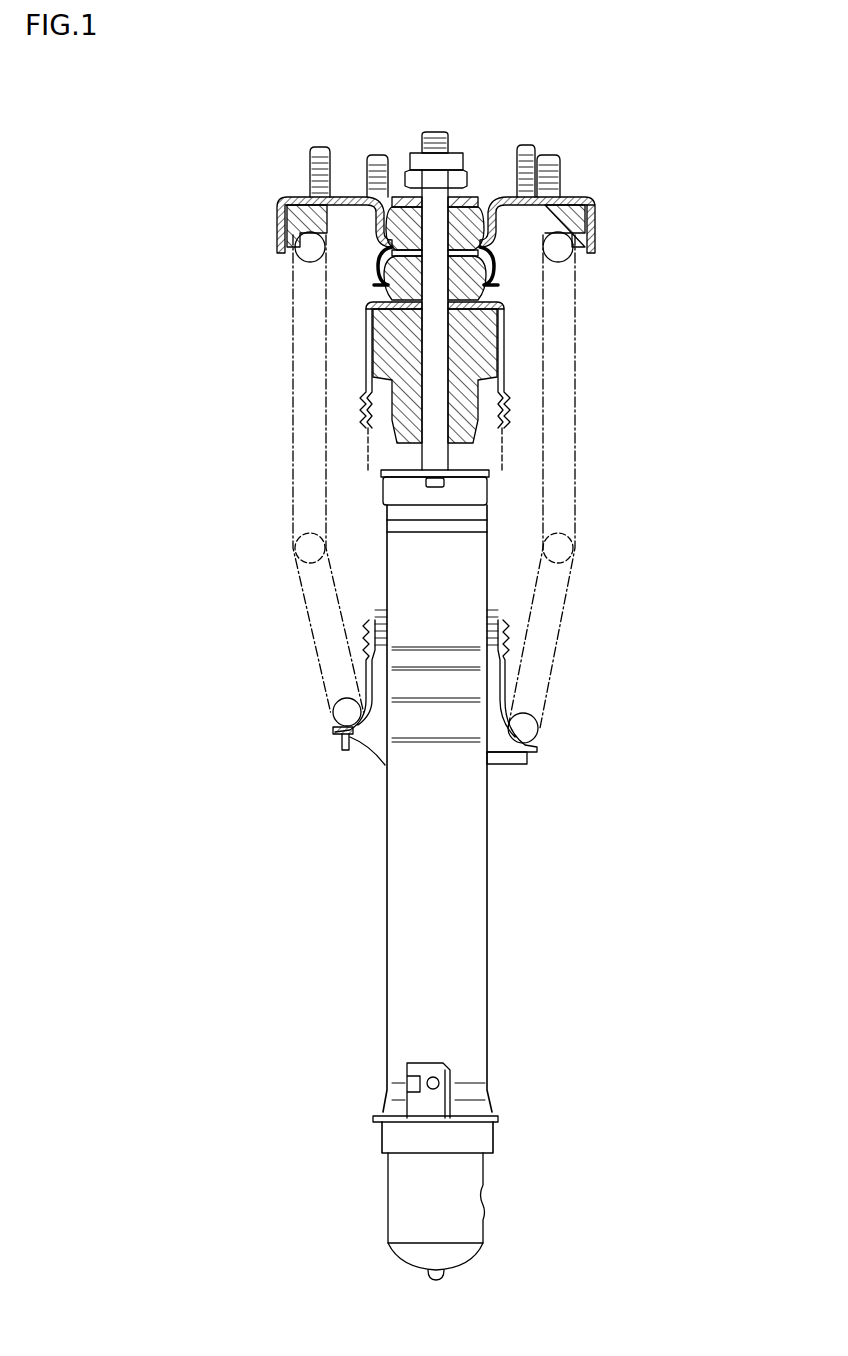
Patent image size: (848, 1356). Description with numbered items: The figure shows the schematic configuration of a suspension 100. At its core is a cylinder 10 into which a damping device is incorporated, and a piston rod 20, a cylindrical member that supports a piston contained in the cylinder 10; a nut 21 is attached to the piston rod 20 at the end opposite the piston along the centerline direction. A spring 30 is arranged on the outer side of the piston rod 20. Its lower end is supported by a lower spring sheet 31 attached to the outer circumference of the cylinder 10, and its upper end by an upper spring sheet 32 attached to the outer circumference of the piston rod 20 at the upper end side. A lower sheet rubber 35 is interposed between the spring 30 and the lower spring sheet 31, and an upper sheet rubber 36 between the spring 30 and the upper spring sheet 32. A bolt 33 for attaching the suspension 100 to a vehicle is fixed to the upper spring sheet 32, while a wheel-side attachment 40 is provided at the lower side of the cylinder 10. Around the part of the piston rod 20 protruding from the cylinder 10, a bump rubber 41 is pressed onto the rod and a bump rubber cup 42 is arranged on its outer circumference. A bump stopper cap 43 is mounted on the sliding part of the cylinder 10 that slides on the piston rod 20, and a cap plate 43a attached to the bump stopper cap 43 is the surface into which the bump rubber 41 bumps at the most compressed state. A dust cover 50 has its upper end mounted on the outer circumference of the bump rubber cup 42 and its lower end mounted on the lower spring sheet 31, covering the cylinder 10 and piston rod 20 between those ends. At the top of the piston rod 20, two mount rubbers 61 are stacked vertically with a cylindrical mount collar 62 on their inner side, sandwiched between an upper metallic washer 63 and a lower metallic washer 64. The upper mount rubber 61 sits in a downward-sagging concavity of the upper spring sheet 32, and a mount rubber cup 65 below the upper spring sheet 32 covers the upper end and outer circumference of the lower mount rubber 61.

The suspension 100 is at (668, 153).
The cylinder 10 is at (387, 910).
The piston rod 20 is at (430, 453).
The nut 21 is at (403, 180).
The spring 30 is at (292, 515).
The lower spring sheet 31 is at (340, 735).
The upper spring sheet 32 is at (279, 220).
The bolt 33 is at (309, 166).
The lower sheet rubber 35 is at (340, 717).
The upper sheet rubber 36 is at (296, 233).
The wheel-side attachment 40 is at (383, 1133).
The bump rubber 41 is at (484, 328).
The bump rubber cup 42 is at (367, 296).
The bump stopper cap 43 is at (478, 490).
The cap plate 43a is at (472, 470).
The dust cover 50 is at (366, 622).
The mount rubbers 61 is at (493, 268).
The mount collar 62 is at (588, 212).
The upper metallic washer 63 is at (472, 197).
The lower metallic washer 64 is at (484, 292).
The mount rubber cup 65 is at (378, 268).